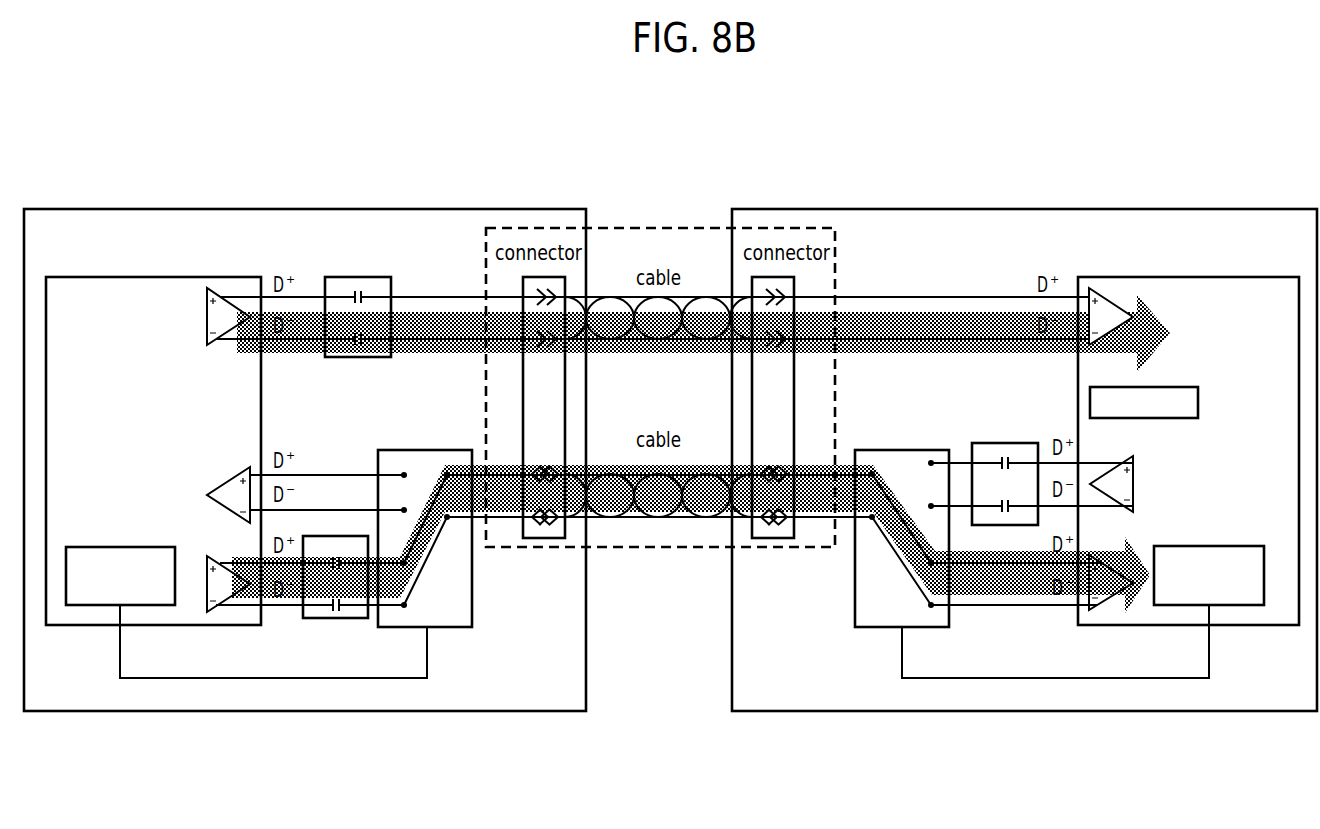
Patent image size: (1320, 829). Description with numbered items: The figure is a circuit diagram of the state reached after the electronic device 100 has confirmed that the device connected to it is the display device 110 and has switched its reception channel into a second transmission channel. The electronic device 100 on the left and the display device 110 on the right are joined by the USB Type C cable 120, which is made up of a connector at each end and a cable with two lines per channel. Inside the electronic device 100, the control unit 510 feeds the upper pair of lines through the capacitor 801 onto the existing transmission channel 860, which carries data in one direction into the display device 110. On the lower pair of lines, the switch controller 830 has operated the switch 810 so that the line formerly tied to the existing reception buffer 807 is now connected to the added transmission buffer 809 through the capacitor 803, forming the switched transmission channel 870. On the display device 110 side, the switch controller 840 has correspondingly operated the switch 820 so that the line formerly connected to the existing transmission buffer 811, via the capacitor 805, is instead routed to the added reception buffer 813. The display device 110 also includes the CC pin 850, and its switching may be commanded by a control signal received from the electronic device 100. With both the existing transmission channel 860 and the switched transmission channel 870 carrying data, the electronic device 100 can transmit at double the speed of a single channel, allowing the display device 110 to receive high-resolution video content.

The electronic device 100 is at (305, 208).
The display device 110 is at (1026, 208).
The USB Type C cable 120 is at (652, 227).
The control unit 510 is at (152, 276).
The capacitor 801 is at (373, 276).
The capacitor 803 is at (347, 619).
The capacitor 805 is at (990, 442).
The reception buffer 807 is at (241, 466).
The transmission buffer 809 is at (208, 549).
The switch 810 is at (473, 607).
The transmission buffer 811 is at (1133, 479).
The reception buffer 813 is at (1095, 609).
The switch 820 is at (855, 607).
The switch controller 830 is at (117, 546).
The switch controller 840 is at (1243, 545).
The CC pin 850 is at (1198, 403).
The existing transmission channel 860 is at (1152, 303).
The switched transmission channel 870 is at (1123, 538).